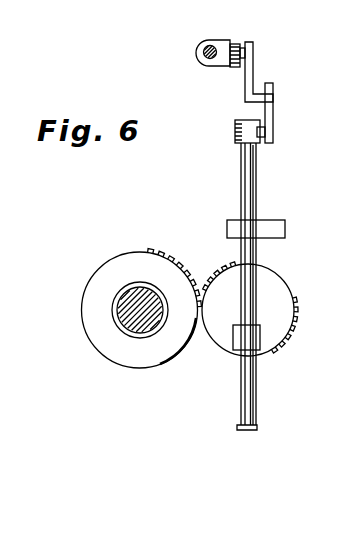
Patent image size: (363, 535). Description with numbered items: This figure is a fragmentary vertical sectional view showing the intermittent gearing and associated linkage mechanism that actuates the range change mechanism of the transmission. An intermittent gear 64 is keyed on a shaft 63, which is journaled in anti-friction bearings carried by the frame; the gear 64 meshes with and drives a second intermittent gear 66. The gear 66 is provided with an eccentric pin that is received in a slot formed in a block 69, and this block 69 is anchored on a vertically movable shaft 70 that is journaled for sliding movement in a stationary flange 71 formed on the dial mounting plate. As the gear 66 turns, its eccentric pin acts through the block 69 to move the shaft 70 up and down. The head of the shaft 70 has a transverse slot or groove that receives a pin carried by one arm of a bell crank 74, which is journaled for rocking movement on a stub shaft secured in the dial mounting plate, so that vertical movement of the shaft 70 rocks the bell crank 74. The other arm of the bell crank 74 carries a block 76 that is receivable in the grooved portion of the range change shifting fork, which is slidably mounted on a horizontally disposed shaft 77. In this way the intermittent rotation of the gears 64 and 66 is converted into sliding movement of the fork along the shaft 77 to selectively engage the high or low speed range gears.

The shaft 63 is at (122, 325).
The intermittent gear 64 is at (158, 253).
The intermittent gear 66 is at (275, 292).
The block 69 is at (243, 337).
The vertically movable shaft 70 is at (254, 192).
The stationary flange 71 is at (272, 232).
The bell crank 74 is at (271, 84).
The block 76 is at (253, 54).
The horizontally disposed shaft 77 is at (211, 44).